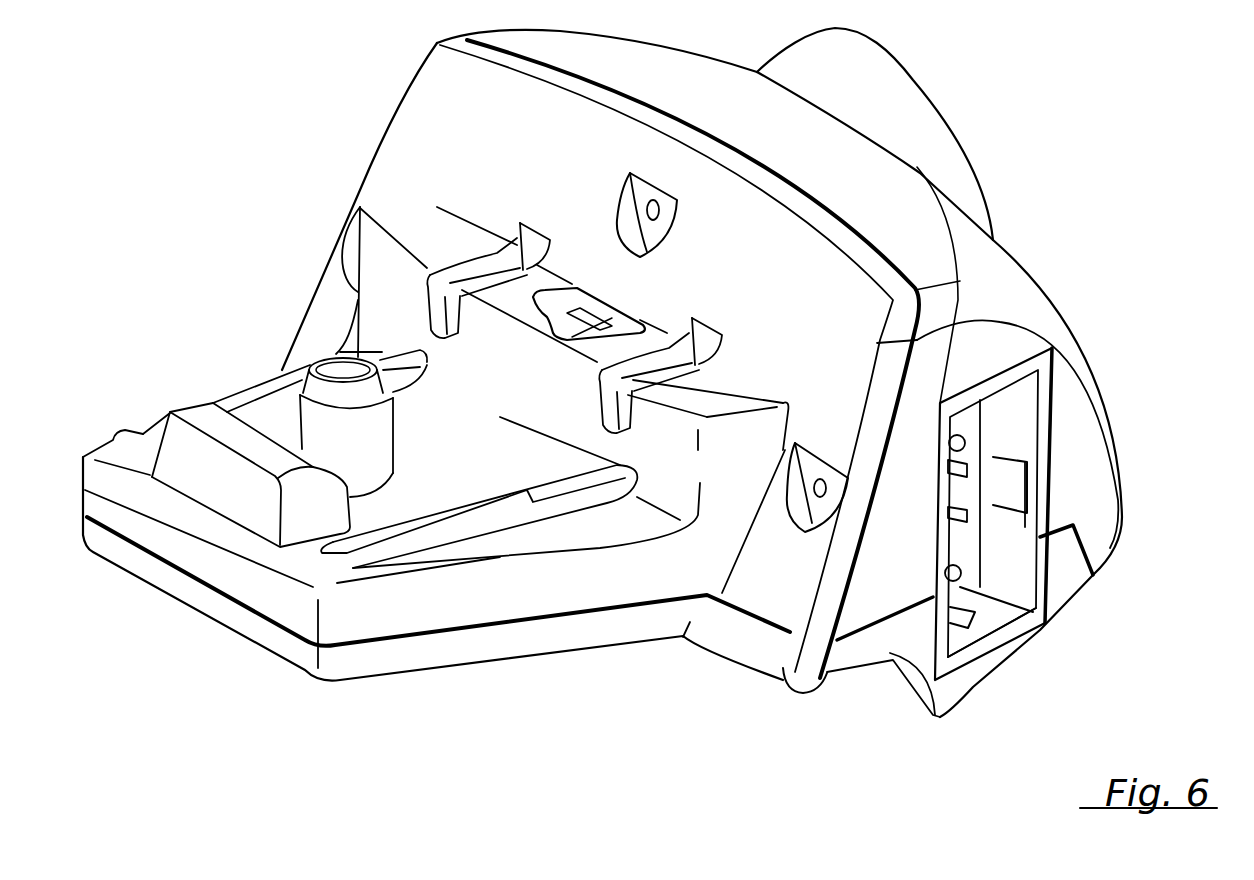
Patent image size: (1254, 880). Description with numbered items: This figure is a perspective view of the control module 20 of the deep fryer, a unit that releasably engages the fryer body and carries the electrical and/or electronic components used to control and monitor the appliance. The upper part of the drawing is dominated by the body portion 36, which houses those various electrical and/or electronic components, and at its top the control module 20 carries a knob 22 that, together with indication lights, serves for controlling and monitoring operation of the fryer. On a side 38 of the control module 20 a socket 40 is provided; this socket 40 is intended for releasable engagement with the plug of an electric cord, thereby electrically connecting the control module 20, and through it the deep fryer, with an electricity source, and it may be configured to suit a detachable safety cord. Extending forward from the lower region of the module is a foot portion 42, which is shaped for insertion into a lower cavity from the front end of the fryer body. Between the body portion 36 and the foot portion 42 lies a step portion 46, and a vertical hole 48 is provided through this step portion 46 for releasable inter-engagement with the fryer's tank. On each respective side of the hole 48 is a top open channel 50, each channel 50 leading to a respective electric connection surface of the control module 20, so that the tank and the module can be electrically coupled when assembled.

The control module 20 is at (973, 267).
The knob 22 is at (885, 93).
The body portion 36 is at (1073, 405).
The side 38 is at (893, 660).
The socket 40 is at (1010, 578).
The foot portion 42 is at (547, 637).
The step portion 46 is at (417, 233).
The vertical hole 48 is at (600, 307).
The top open channel 50 is at (427, 290).